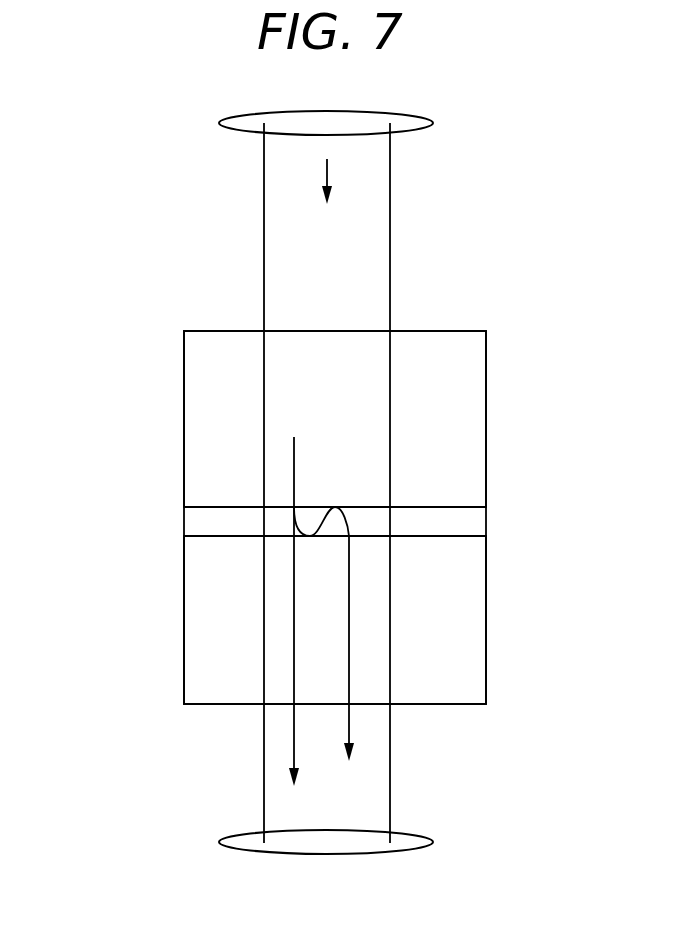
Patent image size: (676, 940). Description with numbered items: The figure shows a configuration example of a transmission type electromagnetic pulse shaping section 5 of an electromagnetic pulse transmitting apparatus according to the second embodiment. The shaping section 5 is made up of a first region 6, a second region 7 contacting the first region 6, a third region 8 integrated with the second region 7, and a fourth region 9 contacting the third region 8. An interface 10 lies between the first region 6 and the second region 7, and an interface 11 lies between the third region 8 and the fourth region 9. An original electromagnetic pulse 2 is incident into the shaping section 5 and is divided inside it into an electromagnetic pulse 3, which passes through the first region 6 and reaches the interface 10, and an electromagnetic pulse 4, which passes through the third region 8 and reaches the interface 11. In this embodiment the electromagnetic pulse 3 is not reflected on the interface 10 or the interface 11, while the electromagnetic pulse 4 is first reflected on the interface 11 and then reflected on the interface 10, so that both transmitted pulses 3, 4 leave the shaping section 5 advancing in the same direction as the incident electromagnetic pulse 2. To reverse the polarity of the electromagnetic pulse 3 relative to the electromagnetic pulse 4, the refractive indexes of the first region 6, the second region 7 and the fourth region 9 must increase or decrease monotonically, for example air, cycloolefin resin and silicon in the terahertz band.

The electromagnetic pulse 2 is at (327, 172).
The electromagnetic pulse 3 is at (293, 740).
The electromagnetic pulse 4 is at (349, 725).
The electromagnetic pulse shaping section 5 is at (100, 437).
The first region 6 is at (193, 459).
The second region 7 is at (193, 520).
The third region 8 is at (335, 521).
The fourth region 9 is at (193, 579).
The interface 10 is at (463, 506).
The interface 11 is at (463, 535).